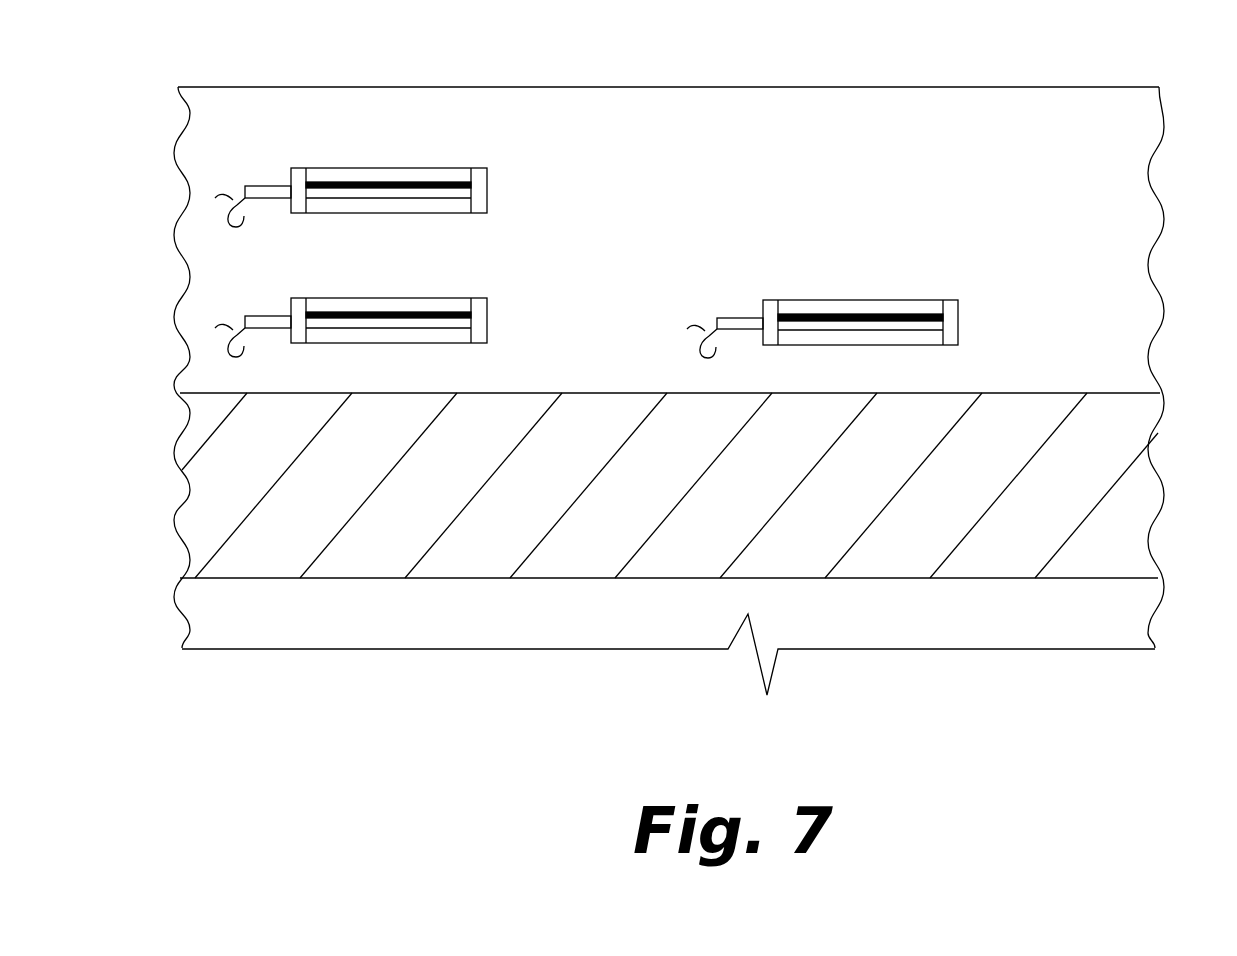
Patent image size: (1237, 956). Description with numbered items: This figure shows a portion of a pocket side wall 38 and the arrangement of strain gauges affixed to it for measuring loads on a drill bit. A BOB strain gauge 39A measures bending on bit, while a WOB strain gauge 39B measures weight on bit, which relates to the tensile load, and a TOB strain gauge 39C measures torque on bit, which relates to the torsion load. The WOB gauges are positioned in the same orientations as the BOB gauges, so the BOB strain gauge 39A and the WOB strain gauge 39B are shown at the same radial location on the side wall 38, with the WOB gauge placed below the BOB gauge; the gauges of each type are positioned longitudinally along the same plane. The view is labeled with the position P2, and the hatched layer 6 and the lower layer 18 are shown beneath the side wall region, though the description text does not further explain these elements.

The side wall 38 is at (767, 125).
The sensor position P2 is at (1150, 183).
The BOB strain gauge 39A is at (327, 168).
The WOB strain gauge 39B is at (327, 298).
The TOB strain gauge 39C is at (797, 300).
The sensor pocket wall / hatched layer 6 is at (1158, 433).
The outer wall of drill collar 18 is at (1125, 630).